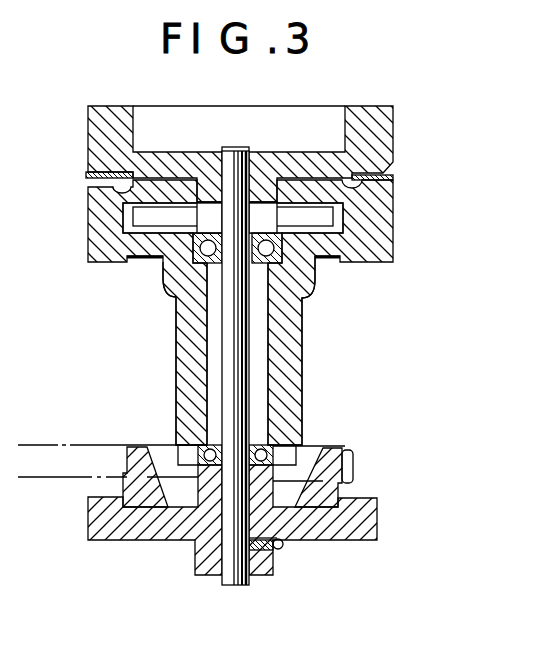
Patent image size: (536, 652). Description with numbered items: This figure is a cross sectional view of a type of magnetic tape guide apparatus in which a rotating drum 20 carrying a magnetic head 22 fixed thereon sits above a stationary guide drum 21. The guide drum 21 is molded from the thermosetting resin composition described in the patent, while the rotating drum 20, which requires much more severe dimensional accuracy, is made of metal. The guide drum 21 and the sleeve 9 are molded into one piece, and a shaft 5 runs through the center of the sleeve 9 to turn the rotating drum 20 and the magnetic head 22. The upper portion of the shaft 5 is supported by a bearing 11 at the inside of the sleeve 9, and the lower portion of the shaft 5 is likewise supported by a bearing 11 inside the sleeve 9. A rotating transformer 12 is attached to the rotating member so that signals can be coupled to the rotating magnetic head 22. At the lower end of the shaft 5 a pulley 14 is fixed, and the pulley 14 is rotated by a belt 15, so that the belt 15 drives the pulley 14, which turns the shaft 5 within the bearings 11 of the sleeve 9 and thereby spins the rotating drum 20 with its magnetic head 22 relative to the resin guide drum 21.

The shaft 5 is at (245, 583).
The sleeve 9 is at (294, 334).
The bearing 11 is at (302, 266).
The rotating transformer 12 is at (332, 215).
The pulley 14 is at (372, 515).
The belt 15 is at (78, 454).
The rotating drum 20 is at (386, 136).
The guide drum 21 is at (384, 254).
The magnetic head 22 is at (388, 176).